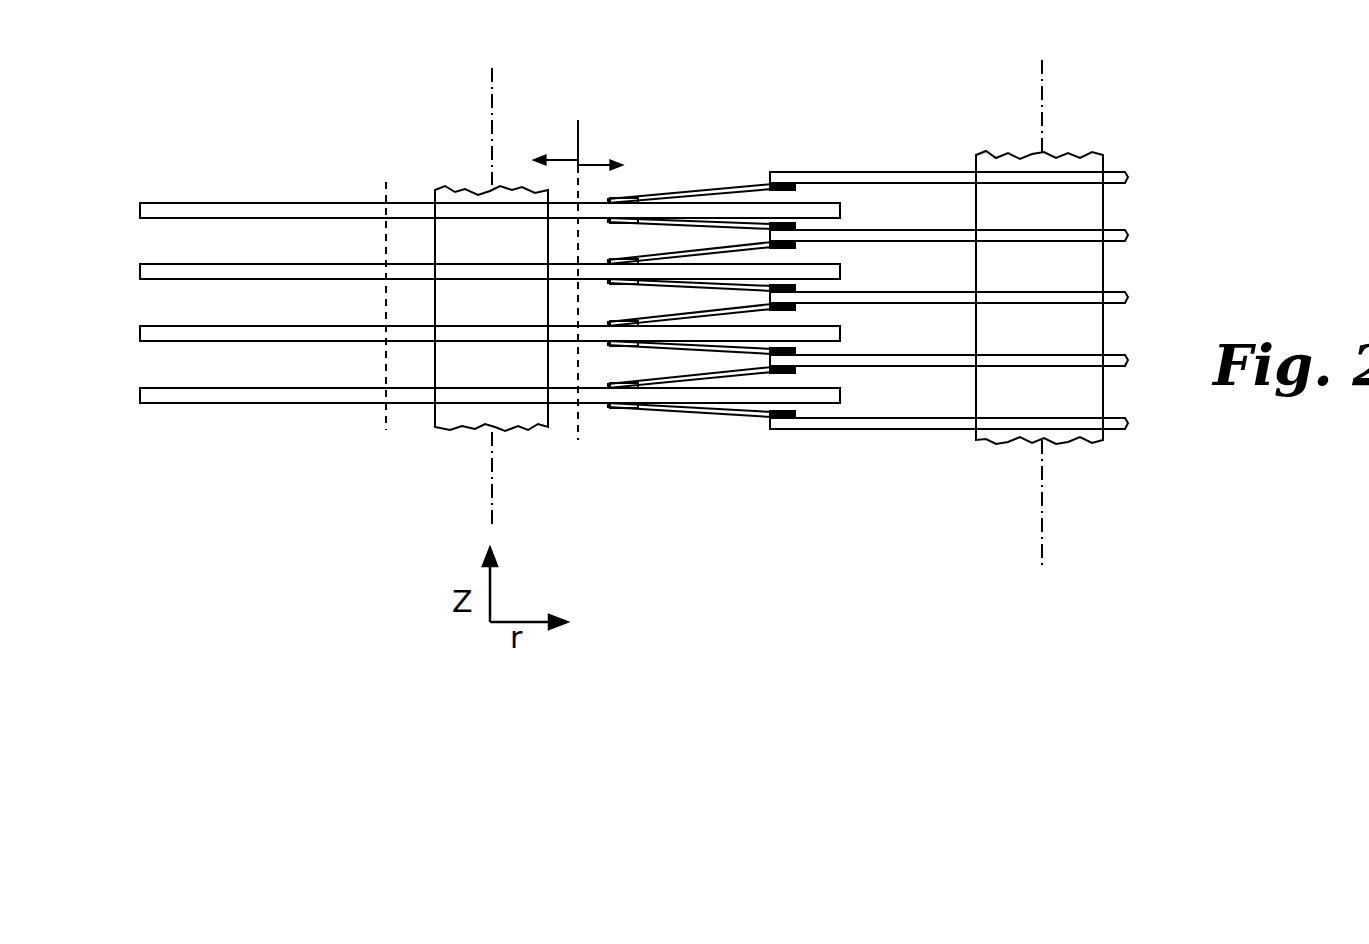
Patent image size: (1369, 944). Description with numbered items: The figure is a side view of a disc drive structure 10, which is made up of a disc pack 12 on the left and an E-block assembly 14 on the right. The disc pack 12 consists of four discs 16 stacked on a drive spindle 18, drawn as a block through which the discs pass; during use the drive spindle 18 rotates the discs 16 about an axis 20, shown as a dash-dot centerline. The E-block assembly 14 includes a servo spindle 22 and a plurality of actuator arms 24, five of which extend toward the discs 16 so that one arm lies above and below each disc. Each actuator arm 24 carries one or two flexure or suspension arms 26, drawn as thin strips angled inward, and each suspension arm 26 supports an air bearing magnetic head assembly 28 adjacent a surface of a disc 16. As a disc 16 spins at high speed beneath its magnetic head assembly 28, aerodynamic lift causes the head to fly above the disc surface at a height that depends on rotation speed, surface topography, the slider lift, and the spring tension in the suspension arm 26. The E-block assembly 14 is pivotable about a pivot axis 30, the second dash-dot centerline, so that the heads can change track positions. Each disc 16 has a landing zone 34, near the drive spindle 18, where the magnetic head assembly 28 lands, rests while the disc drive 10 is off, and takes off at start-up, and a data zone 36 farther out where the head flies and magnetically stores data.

The disc drive structure 10 is at (786, 90).
The disc pack 12 is at (272, 184).
The E-block assembly 14 is at (974, 108).
The disc 16 is at (205, 203).
The drive spindle 18 is at (458, 198).
The axis 20 is at (492, 70).
The servo spindle 22 is at (1093, 207).
The actuator arm 24 is at (855, 172).
The suspension arm 26 is at (690, 198).
The air bearing magnetic head assembly 28 is at (612, 196).
The pivot axis 30 is at (1043, 88).
The landing zone 34 is at (482, 280).
The data zone 36 is at (602, 147).